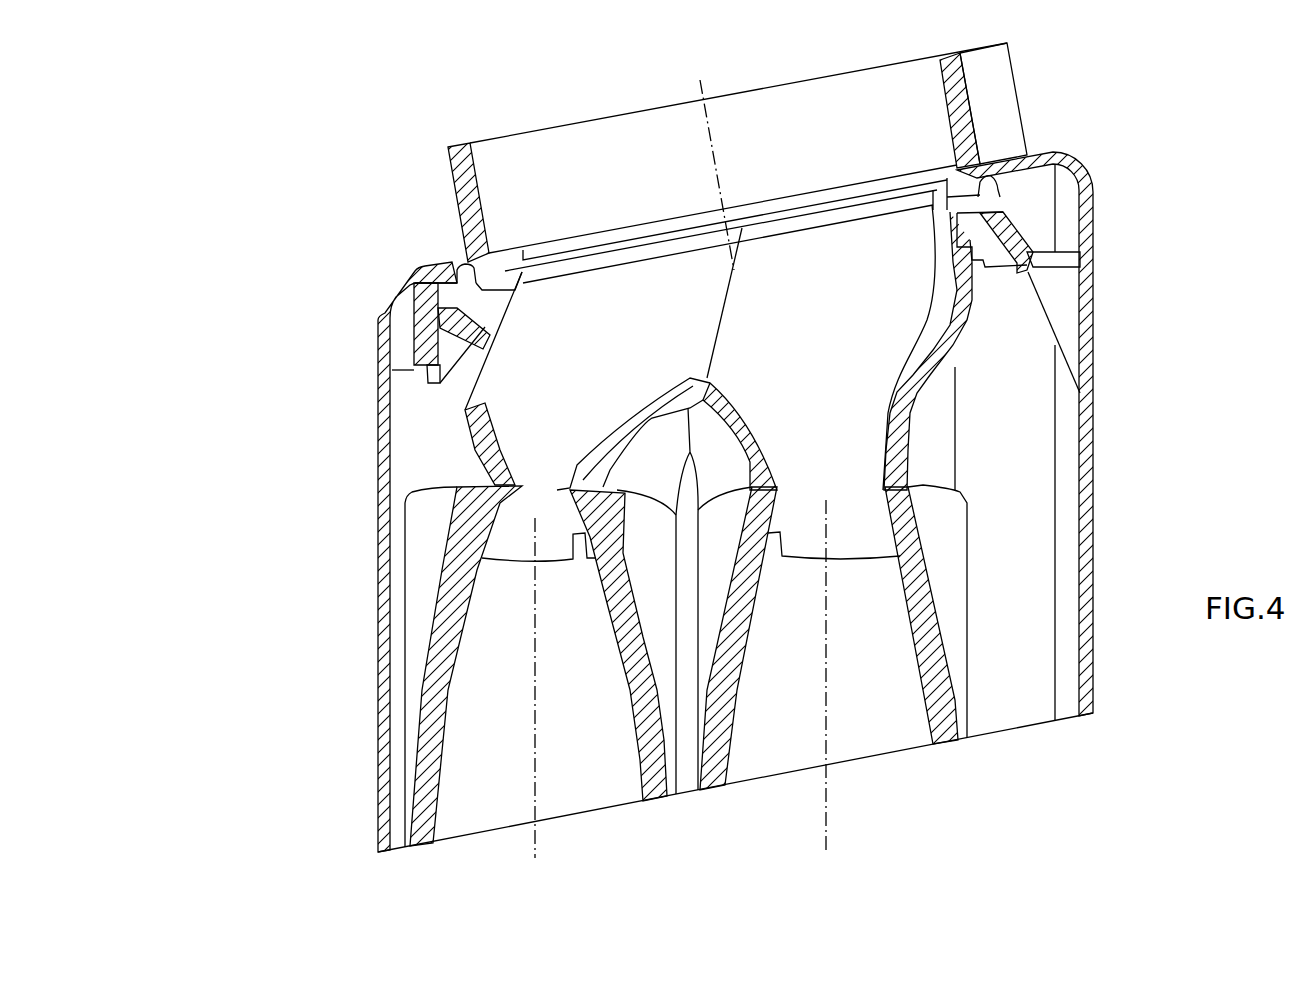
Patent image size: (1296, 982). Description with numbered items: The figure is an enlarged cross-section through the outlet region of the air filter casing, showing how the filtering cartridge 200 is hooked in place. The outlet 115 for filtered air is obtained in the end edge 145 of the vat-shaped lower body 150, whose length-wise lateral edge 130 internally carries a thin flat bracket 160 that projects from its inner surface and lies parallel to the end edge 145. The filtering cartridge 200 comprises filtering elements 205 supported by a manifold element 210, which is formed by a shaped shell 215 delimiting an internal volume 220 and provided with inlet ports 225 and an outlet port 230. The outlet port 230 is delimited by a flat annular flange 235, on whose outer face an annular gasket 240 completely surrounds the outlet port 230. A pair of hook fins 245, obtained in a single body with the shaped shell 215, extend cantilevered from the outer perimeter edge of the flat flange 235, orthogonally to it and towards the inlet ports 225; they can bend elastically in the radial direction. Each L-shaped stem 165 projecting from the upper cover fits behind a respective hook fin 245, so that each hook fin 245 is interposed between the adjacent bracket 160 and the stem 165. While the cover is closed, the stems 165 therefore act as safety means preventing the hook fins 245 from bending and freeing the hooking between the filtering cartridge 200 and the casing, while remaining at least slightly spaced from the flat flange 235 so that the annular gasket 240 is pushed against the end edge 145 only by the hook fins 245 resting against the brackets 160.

The outlet 115 is at (614, 234).
The lateral edge 130 is at (385, 577).
The end edge 145 is at (450, 263).
The lower body 150 is at (357, 710).
The bracket 160 is at (415, 366).
The stem 165 is at (458, 343).
The filtering cartridge 200 is at (980, 680).
The filtering element 205 is at (652, 718).
The manifold element 210 is at (976, 471).
The shaped shell 215 is at (893, 376).
The internal volume 220 is at (796, 300).
The inlet port 225 is at (513, 568).
The outlet port 230 is at (613, 262).
The flat annular flange 235 is at (490, 293).
The annular gasket 240 is at (990, 187).
The hook fin 245 is at (443, 377).